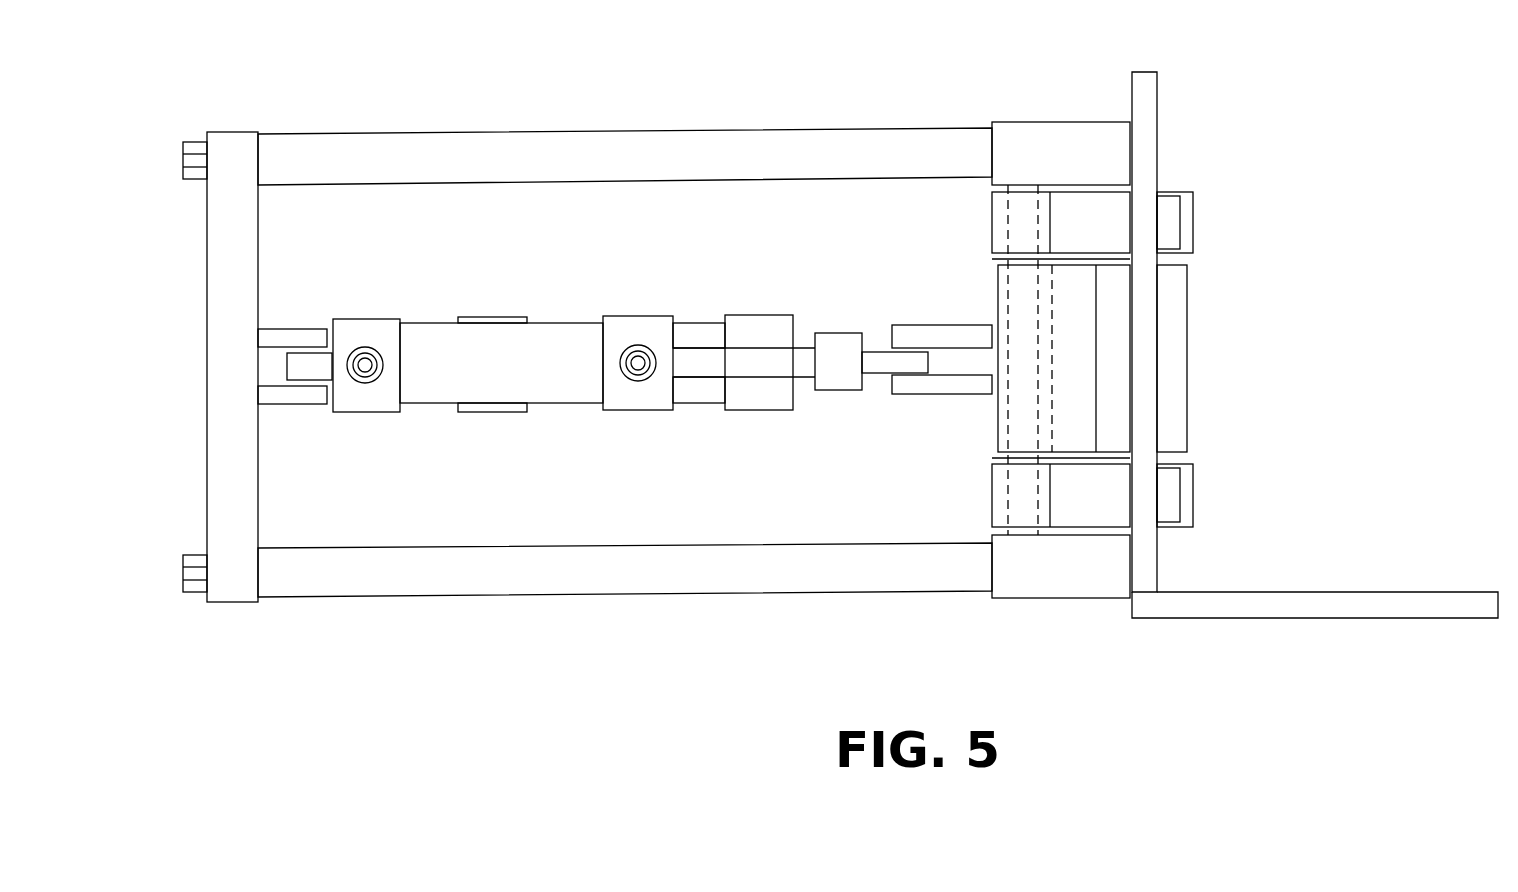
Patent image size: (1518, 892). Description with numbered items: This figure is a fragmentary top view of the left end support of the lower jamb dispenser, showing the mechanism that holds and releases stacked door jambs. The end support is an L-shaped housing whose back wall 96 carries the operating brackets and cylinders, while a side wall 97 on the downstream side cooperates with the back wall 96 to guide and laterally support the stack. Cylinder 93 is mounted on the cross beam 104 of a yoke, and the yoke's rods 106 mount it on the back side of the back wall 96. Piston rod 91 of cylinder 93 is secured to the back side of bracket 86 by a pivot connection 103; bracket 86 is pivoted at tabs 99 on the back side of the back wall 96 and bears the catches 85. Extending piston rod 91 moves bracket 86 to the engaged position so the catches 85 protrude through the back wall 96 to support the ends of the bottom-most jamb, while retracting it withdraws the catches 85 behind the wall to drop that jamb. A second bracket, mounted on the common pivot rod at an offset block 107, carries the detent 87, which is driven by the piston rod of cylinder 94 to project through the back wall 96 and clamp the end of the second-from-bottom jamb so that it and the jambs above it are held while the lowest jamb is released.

The catches 85 is at (1193, 216).
The bracket 86 is at (990, 216).
The detent 87 is at (1187, 338).
The piston rod 91 is at (802, 365).
The cylinder 93 is at (535, 380).
The cylinder 94 is at (757, 315).
The back wall 96 is at (1160, 112).
The side wall 97 is at (1378, 592).
The tabs 99 is at (1062, 80).
The pivot connection 103 is at (950, 400).
The cross beam 104 is at (234, 245).
The rods 106 is at (498, 133).
The offset block 107 is at (1090, 366).